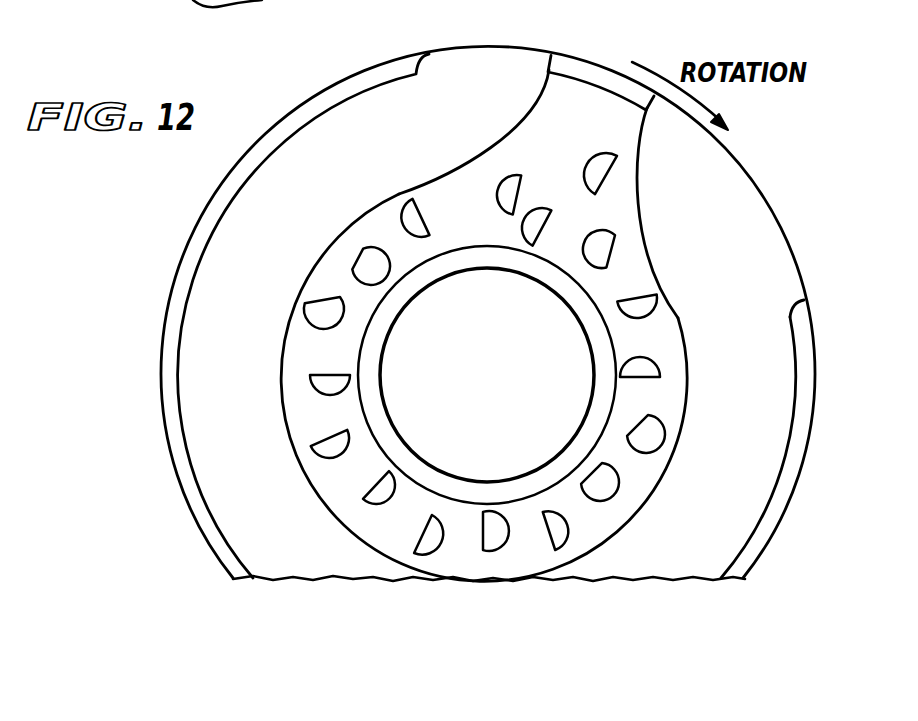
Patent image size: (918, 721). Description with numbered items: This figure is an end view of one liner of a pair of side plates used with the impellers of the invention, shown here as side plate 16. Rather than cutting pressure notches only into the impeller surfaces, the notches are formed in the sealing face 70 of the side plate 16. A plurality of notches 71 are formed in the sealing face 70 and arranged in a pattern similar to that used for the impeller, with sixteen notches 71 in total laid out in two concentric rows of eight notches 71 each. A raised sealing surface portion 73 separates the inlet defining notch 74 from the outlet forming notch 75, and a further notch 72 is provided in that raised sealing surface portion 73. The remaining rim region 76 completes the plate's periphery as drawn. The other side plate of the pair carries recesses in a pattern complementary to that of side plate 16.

The side plate 16 is at (124, 455).
The sealing face 70 is at (679, 345).
The notches 71 is at (328, 304).
The further notch 72 is at (594, 166).
The raised sealing surface portion 73 is at (578, 86).
The inlet defining notch 74 is at (522, 67).
The outlet forming notch 75 is at (702, 152).
The rim segment 76 is at (255, 186).